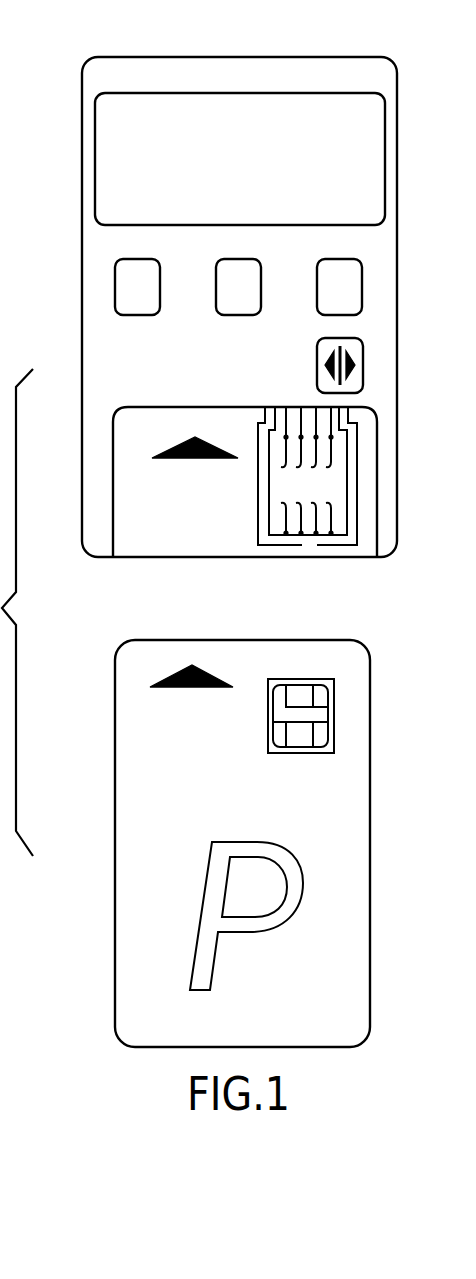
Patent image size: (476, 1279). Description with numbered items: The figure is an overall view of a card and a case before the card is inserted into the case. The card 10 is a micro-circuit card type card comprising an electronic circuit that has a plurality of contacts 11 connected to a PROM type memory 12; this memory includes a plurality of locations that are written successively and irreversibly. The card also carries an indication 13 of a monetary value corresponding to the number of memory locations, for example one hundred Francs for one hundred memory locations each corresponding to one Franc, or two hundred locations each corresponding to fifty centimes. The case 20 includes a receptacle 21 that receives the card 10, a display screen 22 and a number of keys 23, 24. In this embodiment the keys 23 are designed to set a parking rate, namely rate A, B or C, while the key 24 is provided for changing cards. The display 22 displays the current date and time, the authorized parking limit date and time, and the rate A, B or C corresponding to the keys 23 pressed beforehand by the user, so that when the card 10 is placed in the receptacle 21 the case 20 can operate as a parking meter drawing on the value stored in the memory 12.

The card 10 is at (320, 913).
The contacts 11 is at (307, 683).
The PROM type memory 12 is at (312, 716).
The indication of a monetary value 13 is at (140, 718).
The case 20 is at (385, 300).
The receptacle 21 is at (360, 551).
The display screen 22 is at (253, 117).
The keys 23 is at (135, 270).
The key 24 is at (350, 348).